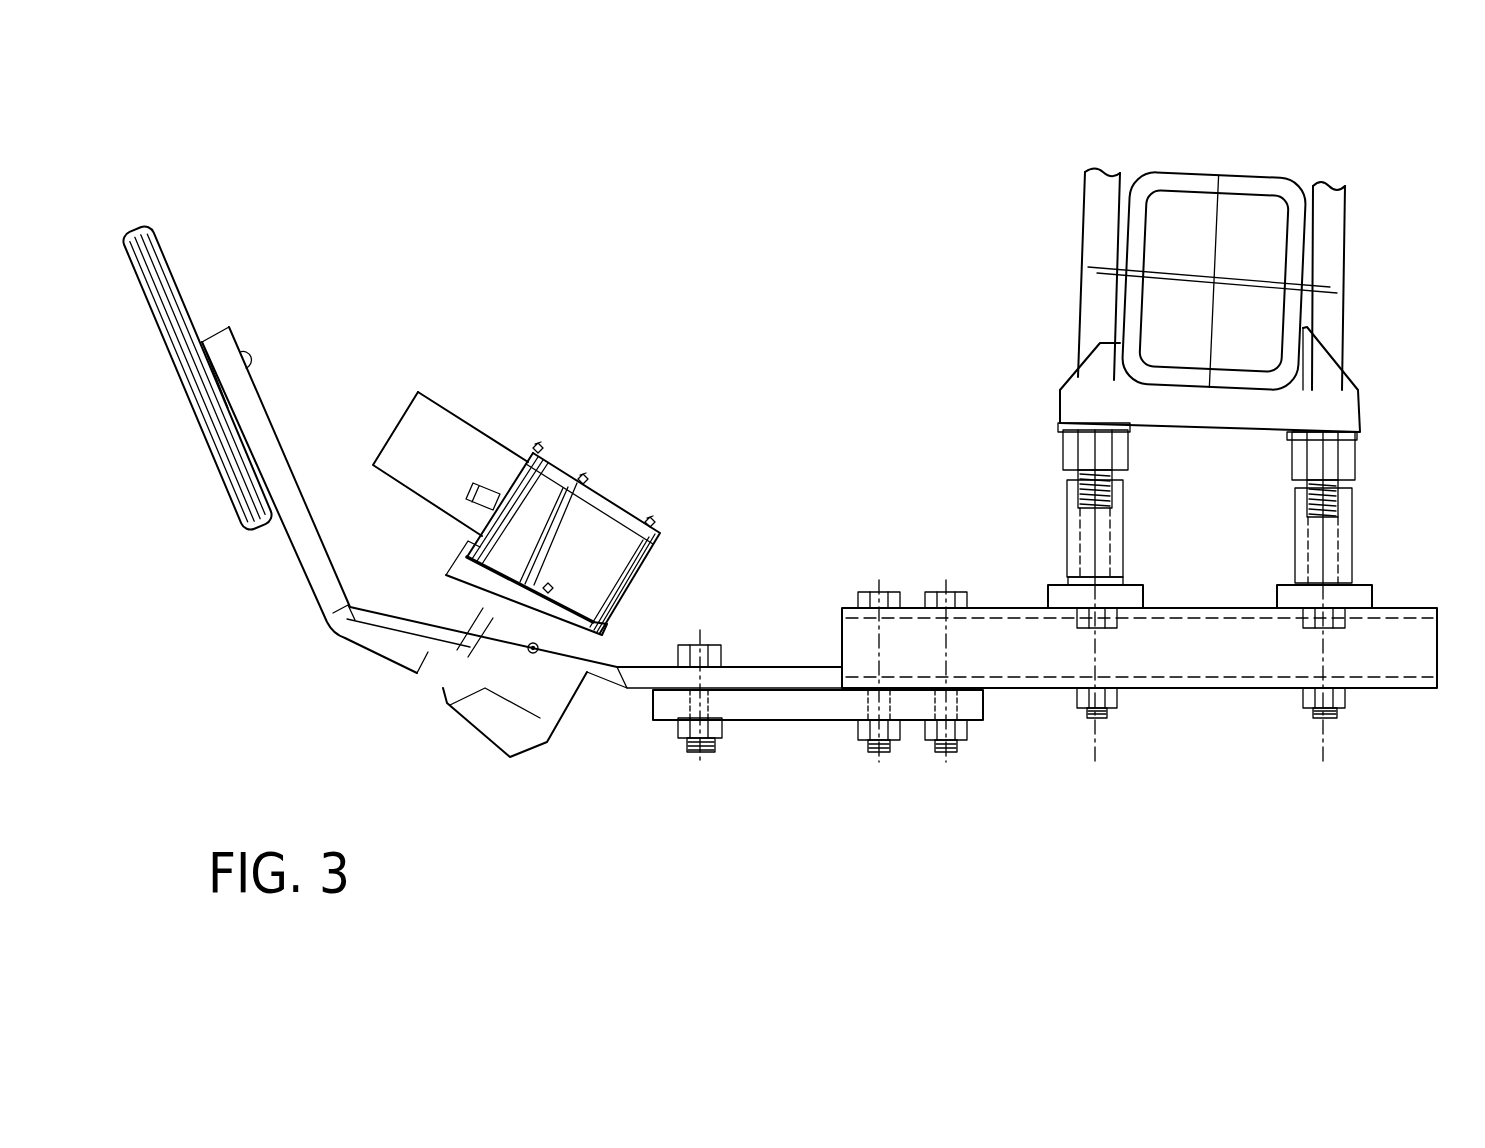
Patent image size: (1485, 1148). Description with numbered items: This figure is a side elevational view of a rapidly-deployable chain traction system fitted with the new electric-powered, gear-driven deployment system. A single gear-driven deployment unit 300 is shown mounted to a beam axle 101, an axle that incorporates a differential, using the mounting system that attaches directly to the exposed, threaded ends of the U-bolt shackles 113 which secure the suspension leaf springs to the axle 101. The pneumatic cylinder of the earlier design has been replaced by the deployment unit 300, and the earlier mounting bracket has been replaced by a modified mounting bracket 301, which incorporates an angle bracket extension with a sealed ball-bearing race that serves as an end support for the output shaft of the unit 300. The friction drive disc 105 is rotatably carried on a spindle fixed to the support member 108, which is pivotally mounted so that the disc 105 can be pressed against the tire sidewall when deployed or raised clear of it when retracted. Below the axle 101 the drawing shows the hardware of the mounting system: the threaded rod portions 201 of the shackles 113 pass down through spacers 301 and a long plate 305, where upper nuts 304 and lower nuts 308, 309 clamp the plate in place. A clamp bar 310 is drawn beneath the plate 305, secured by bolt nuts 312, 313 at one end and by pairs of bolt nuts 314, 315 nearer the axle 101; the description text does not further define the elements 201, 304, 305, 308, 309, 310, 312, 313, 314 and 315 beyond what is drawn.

The drive axle 101 is at (1190, 187).
The friction drive disc 105 is at (153, 245).
The support member 108 is at (297, 525).
The U-bolt shackles 113 is at (1097, 312).
The threaded rods 201 is at (1300, 523).
The gear-driven deployment unit 300 is at (618, 450).
The modified mounting bracket 301 is at (1283, 595).
The upper nuts 304 is at (1308, 627).
The mounting plate 305 is at (1045, 659).
The lower nut 308 is at (1087, 720).
The lower nut 309 is at (1305, 708).
The clamp bar 310 is at (818, 705).
The bolt nut 312 is at (744, 624).
The bolt nut 313 is at (680, 730).
The bolt nuts 314 is at (937, 593).
The bolt nuts 315 is at (930, 730).